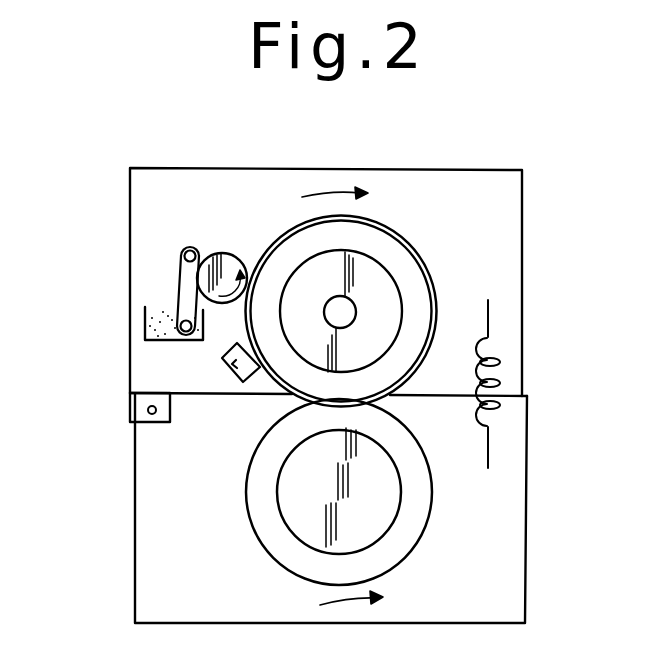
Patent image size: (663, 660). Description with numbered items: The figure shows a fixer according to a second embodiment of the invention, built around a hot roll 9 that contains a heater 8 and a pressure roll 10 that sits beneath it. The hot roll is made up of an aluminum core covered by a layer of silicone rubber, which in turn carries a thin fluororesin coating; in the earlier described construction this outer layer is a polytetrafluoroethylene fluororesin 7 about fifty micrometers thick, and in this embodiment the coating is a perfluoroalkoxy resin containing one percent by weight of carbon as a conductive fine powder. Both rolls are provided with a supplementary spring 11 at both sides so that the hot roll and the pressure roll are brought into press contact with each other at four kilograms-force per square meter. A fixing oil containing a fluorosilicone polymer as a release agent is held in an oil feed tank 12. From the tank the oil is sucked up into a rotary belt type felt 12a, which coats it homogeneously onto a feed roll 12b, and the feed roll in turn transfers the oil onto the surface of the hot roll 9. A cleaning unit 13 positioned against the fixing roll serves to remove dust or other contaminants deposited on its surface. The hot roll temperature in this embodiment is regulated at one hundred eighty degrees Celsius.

The polytetrafluoroethylene fluororesin 7 is at (378, 224).
The heater 8 is at (355, 303).
The hot roll 9 is at (405, 240).
The pressure roll 10 is at (432, 518).
The supplementary spring 11 is at (488, 322).
The oil feed tank 12 is at (147, 327).
The rotary belt type felt 12a is at (177, 280).
The feed roll 12b is at (226, 253).
The cleaning unit 13 is at (232, 367).